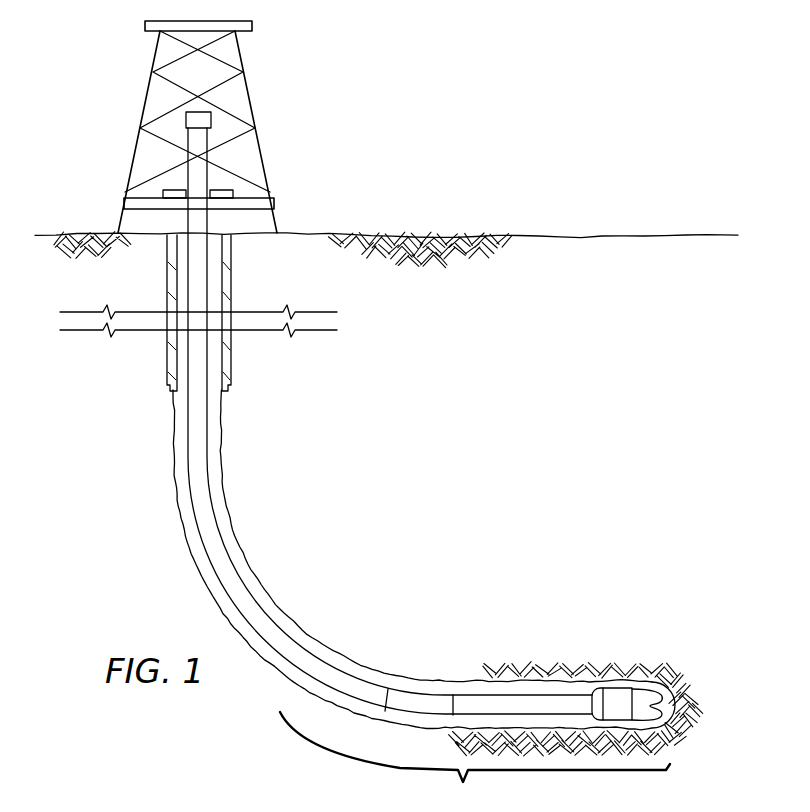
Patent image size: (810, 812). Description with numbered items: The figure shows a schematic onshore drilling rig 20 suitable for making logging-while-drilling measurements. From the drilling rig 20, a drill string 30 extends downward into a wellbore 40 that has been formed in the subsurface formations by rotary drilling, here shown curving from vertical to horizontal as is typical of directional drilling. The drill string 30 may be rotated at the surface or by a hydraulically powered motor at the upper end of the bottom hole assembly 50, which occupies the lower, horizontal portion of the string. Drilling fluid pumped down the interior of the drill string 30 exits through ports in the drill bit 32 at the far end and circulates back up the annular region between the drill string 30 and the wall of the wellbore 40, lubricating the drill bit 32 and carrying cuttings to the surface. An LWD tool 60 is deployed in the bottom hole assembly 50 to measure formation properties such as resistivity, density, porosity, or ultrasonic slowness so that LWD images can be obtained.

The drilling rig 20 is at (254, 100).
The drill string 30 is at (200, 468).
The drill bit 32 is at (613, 697).
The wellbore 40 is at (226, 434).
The bottom hole assembly 50 is at (475, 762).
The LWD tool 60 is at (423, 703).